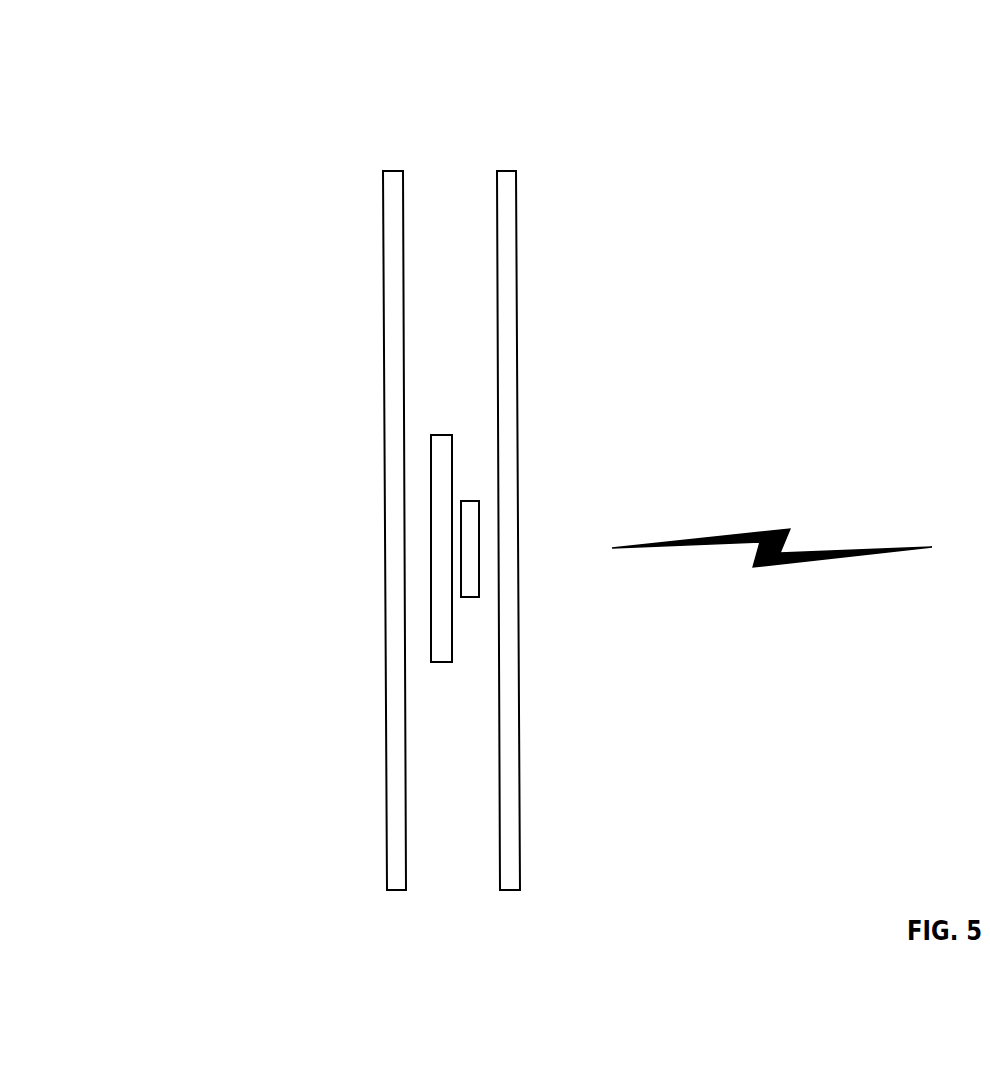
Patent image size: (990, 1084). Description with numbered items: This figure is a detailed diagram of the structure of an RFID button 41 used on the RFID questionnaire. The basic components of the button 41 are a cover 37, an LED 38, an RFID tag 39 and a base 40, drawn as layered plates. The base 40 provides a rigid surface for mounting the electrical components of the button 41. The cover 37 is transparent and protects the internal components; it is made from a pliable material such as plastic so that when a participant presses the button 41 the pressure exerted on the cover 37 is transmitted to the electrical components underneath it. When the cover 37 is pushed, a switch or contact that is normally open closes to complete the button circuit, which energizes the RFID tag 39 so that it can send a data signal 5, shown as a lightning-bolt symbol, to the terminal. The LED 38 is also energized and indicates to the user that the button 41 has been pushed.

The button 41 is at (631, 169).
The base 40 is at (382, 323).
The RFID tag 39 is at (449, 434).
The LED 38 is at (483, 507).
The cover 37 is at (519, 702).
The data signal 5 is at (762, 565).